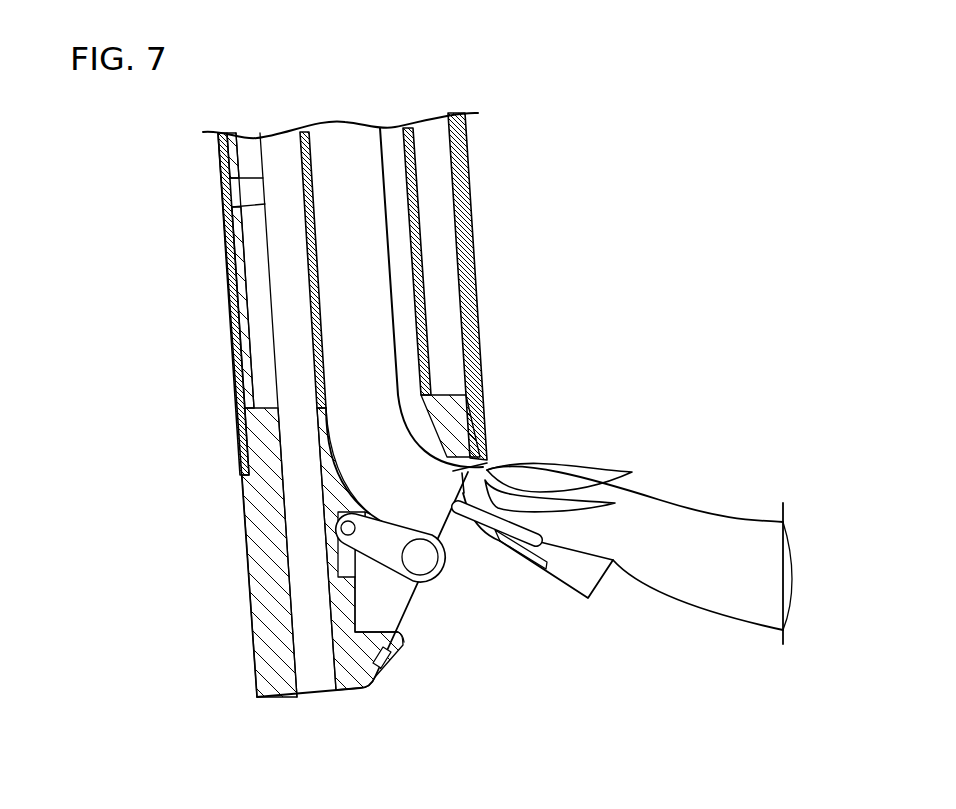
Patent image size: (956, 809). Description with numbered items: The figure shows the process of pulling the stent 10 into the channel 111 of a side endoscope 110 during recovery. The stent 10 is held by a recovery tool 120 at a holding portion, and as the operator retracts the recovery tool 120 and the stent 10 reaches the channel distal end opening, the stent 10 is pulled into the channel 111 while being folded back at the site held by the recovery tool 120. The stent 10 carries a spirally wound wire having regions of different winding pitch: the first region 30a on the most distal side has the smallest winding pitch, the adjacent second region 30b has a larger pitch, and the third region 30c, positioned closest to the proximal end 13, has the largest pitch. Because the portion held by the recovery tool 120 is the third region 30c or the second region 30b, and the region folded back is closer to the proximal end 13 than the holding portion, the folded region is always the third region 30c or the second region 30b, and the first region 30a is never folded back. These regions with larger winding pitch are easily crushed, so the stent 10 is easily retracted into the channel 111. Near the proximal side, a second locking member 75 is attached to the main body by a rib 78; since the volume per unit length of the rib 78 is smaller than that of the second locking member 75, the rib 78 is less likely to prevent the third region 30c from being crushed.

The endoscope 110 is at (197, 254).
The channel 111 is at (412, 214).
The recovery tool 120 is at (380, 363).
The stent 10 is at (613, 560).
The first region 30a is at (740, 603).
The second region 30b is at (632, 523).
The third region 30c is at (490, 540).
The proximal end 13 is at (590, 583).
The second locking member 75 is at (537, 505).
The rib 78 is at (528, 557).